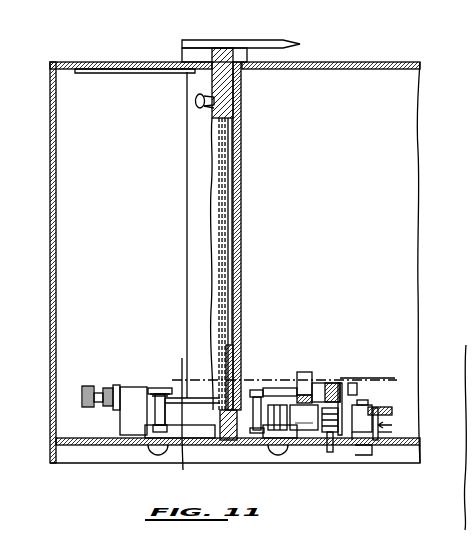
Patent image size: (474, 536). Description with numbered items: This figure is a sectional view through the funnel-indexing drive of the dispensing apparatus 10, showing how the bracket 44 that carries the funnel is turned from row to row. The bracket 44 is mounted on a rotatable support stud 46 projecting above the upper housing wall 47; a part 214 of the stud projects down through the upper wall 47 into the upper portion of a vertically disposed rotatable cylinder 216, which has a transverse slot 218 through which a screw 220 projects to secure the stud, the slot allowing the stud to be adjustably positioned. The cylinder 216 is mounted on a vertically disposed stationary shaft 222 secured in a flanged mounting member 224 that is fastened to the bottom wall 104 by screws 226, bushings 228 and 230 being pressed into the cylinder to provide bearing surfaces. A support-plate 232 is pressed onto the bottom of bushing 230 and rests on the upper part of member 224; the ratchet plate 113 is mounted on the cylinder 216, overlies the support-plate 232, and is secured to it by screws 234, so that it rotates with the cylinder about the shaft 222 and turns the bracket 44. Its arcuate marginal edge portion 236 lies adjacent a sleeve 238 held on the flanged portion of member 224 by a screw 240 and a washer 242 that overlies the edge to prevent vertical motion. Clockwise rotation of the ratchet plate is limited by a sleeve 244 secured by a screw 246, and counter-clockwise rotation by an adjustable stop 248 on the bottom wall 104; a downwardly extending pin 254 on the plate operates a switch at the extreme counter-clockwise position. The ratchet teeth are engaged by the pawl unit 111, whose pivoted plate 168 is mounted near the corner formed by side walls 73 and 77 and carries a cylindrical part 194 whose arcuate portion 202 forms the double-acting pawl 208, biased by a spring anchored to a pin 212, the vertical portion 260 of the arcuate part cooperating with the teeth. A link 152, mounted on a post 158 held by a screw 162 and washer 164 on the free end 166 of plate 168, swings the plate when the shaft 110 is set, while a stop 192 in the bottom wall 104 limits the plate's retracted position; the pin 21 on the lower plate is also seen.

The apparatus 10 is at (392, 376).
The downwardly projecting pin 21 is at (357, 382).
The bracket 44 is at (256, 40).
The support stud 46 is at (189, 54).
The upper housing wall 47 is at (112, 62).
The side wall 73 is at (50, 240).
The side wall 77 is at (408, 148).
The bottom wall 104 is at (392, 446).
The shaft 110 is at (464, 518).
The pawl unit 111 is at (398, 425).
The ratchet plate 113 is at (195, 399).
The link 152 is at (388, 409).
The post 158 is at (384, 433).
The screw 162 is at (366, 402).
The washer 164 is at (378, 408).
The free end of pivoted plate 166 is at (364, 445).
The pivoted plate 168 is at (355, 440).
The stop 192 is at (314, 438).
The cylindrical part 194 is at (304, 417).
The arcuate portion 202 is at (308, 383).
The double-acting pawl 208 is at (324, 383).
The pin 212 is at (345, 383).
The part of support stud 214 is at (236, 103).
The cylinder 216 is at (188, 178).
The transverse slot 218 is at (196, 101).
The screw 220 is at (213, 110).
The stationary shaft 222 is at (216, 268).
The flanged mounting member 224 is at (145, 433).
The screws 226 is at (152, 449).
The bushing 228 is at (243, 150).
The bushing 230 is at (242, 359).
The support-plate 232 is at (205, 406).
The screws 234 is at (182, 462).
The arcuate marginal edge portion 236 is at (182, 360).
The sleeve 238 is at (147, 412).
The screw 240 is at (163, 388).
The washer 242 is at (150, 390).
The sleeve 244 is at (252, 390).
The screw 246 is at (266, 396).
The adjustable stop 248 is at (116, 386).
The downwardly extending pin 254 is at (281, 415).
The vertical portion 260 is at (318, 383).